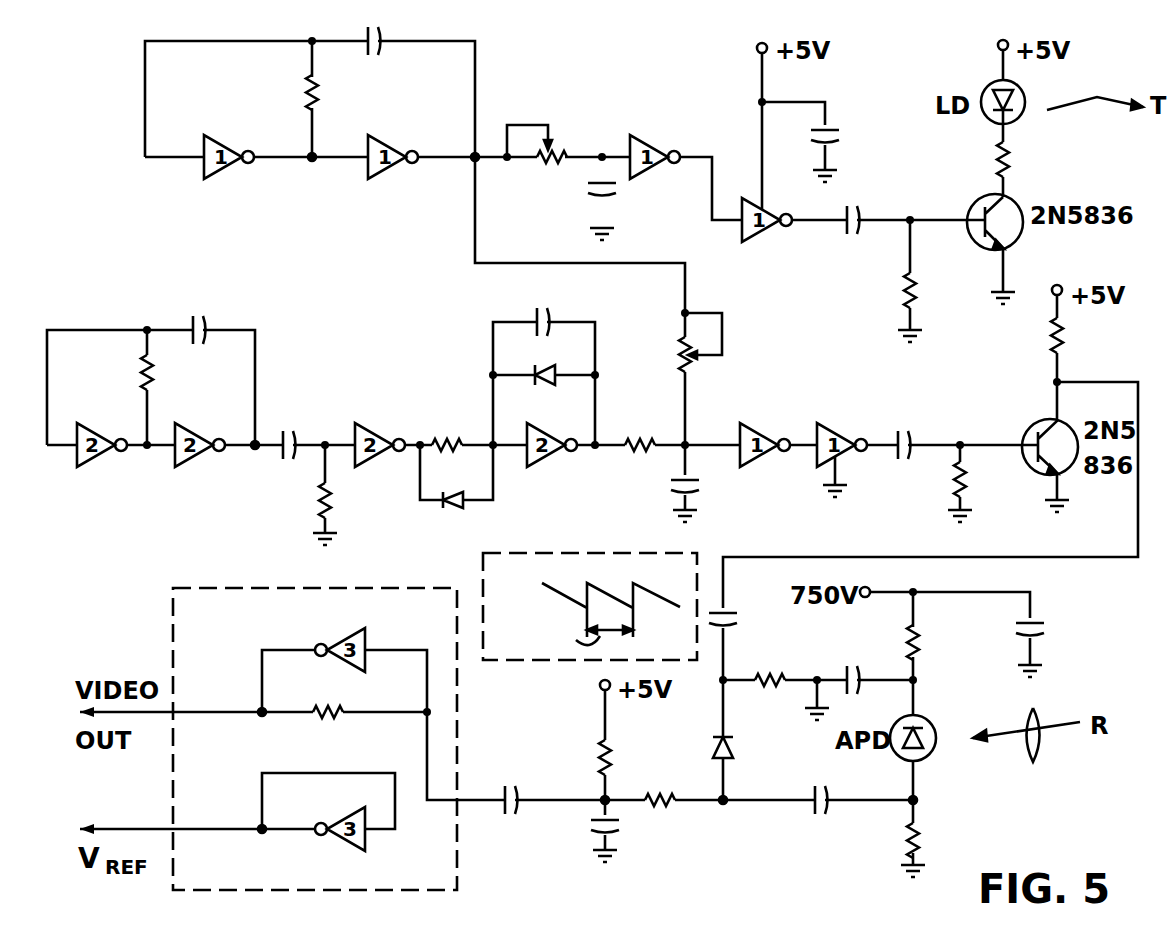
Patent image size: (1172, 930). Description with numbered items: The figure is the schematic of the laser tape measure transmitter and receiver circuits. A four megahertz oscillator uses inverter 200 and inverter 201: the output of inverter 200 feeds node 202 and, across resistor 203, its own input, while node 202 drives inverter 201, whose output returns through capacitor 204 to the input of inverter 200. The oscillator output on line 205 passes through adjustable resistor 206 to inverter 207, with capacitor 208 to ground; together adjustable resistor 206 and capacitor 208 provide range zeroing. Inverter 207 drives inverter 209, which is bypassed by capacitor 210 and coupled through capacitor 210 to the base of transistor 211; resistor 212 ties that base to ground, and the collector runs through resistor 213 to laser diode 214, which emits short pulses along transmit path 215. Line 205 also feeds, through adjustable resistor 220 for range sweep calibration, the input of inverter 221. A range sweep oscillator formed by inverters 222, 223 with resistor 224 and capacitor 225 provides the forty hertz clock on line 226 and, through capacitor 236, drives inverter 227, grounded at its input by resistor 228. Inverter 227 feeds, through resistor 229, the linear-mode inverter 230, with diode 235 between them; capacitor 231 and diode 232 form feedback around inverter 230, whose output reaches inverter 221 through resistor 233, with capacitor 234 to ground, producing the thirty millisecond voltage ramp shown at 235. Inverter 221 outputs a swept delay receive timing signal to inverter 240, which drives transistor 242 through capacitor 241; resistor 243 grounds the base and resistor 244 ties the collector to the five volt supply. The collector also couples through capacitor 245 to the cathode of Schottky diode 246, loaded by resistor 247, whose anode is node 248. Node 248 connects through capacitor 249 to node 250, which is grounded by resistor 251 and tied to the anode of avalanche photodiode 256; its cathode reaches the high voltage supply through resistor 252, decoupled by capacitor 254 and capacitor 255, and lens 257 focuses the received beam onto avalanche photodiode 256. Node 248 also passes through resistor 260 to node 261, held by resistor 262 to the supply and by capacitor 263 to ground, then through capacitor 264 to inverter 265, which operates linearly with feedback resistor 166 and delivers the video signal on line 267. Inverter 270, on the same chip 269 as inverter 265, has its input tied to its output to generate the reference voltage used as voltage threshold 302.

The inverter 200 is at (225, 166).
The inverter 201 is at (384, 141).
The node 202 is at (313, 161).
The resistor 203 is at (311, 78).
The capacitor 204 is at (369, 52).
The line 205 is at (473, 161).
The adjustable resistor 206 is at (550, 143).
The inverter 207 is at (645, 143).
The capacitor 208 is at (597, 191).
The inverter 209 is at (764, 237).
The capacitor 210 is at (857, 212).
The transistor 211 is at (1017, 245).
The resistor 212 is at (906, 287).
The resistor 213 is at (998, 158).
The laser diode 214 is at (996, 84).
The transmit path 215 is at (1097, 97).
The adjustable resistor 220 is at (688, 360).
The inverter 221 is at (756, 427).
The inverter 222 is at (96, 470).
The inverter 223 is at (196, 467).
The resistor 224 is at (144, 379).
The capacitor 225 is at (194, 317).
The line 226 is at (256, 450).
The inverter 227 is at (376, 428).
The resistor 228 is at (320, 505).
The resistor 229 is at (446, 440).
The inverter 230 is at (546, 466).
The capacitor 231 is at (538, 312).
The diode 232 is at (530, 375).
The resistor 233 is at (626, 471).
The capacitor 234 is at (680, 491).
The diode 235 is at (454, 509).
The capacitor 236 is at (291, 430).
The inverter 240 is at (831, 426).
The capacitor 241 is at (903, 429).
The transistor 242 is at (1032, 425).
The resistor 243 is at (952, 488).
The resistor 244 is at (1053, 338).
The capacitor 245 is at (726, 606).
The Schottky diode 246 is at (734, 746).
The resistor 247 is at (786, 643).
The node 248 is at (724, 803).
The capacitor 249 is at (815, 791).
The node 250 is at (918, 798).
The resistor 251 is at (906, 849).
The resistor 252 is at (916, 641).
The capacitor 254 is at (1034, 620).
The capacitor 255 is at (856, 671).
The avalanche photodiode 256 is at (926, 721).
The lens 257 is at (1036, 713).
The resistor 260 is at (676, 806).
The node 261 is at (603, 794).
The resistor 262 is at (601, 744).
The capacitor 263 is at (600, 832).
The capacitor 264 is at (508, 813).
The inverter 265 is at (340, 640).
The 22M resistor 166 is at (321, 711).
The line 267 is at (216, 710).
The chip 269 is at (173, 630).
The inverter 270 is at (341, 848).
The voltage threshold 302 is at (216, 826).